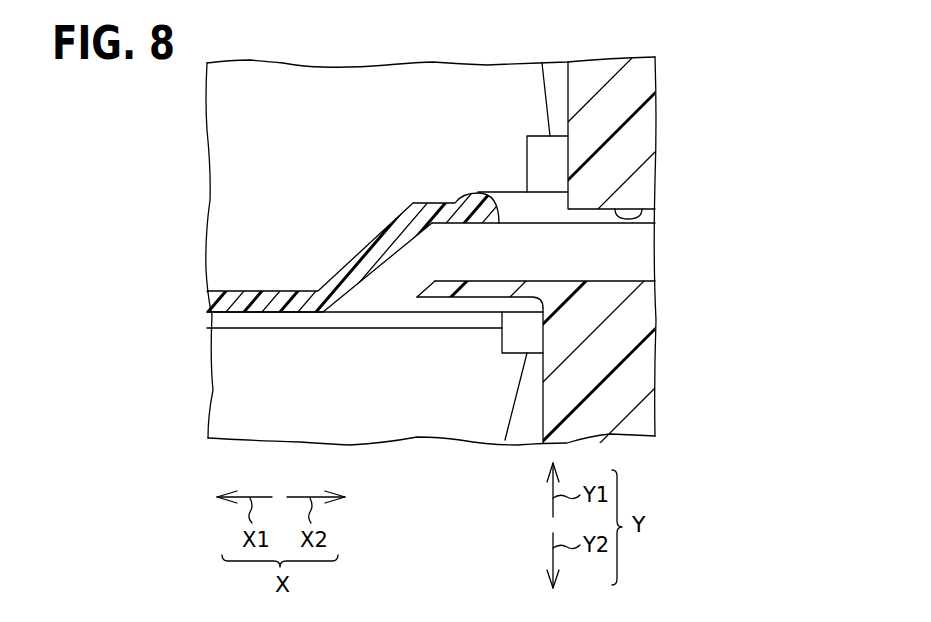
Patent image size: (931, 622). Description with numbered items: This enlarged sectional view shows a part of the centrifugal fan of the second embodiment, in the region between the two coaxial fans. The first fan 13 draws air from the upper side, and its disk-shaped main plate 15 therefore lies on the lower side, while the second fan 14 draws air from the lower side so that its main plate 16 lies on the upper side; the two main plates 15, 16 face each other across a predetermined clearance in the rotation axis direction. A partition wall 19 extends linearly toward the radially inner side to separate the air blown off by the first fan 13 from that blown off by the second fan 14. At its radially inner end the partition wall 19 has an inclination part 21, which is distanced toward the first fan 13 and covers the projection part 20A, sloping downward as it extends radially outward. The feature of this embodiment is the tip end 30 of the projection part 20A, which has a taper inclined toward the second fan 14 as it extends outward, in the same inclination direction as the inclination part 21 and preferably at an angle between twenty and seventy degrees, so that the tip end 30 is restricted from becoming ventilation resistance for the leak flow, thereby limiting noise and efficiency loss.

The first fan 13 is at (640, 133).
The second fan 14 is at (628, 382).
The main plate 15 is at (642, 207).
The main plate 16 is at (600, 282).
The partition wall 19 is at (252, 313).
The projection part 20A is at (472, 297).
The inclination part 21 is at (372, 243).
The tip end 30 is at (426, 289).